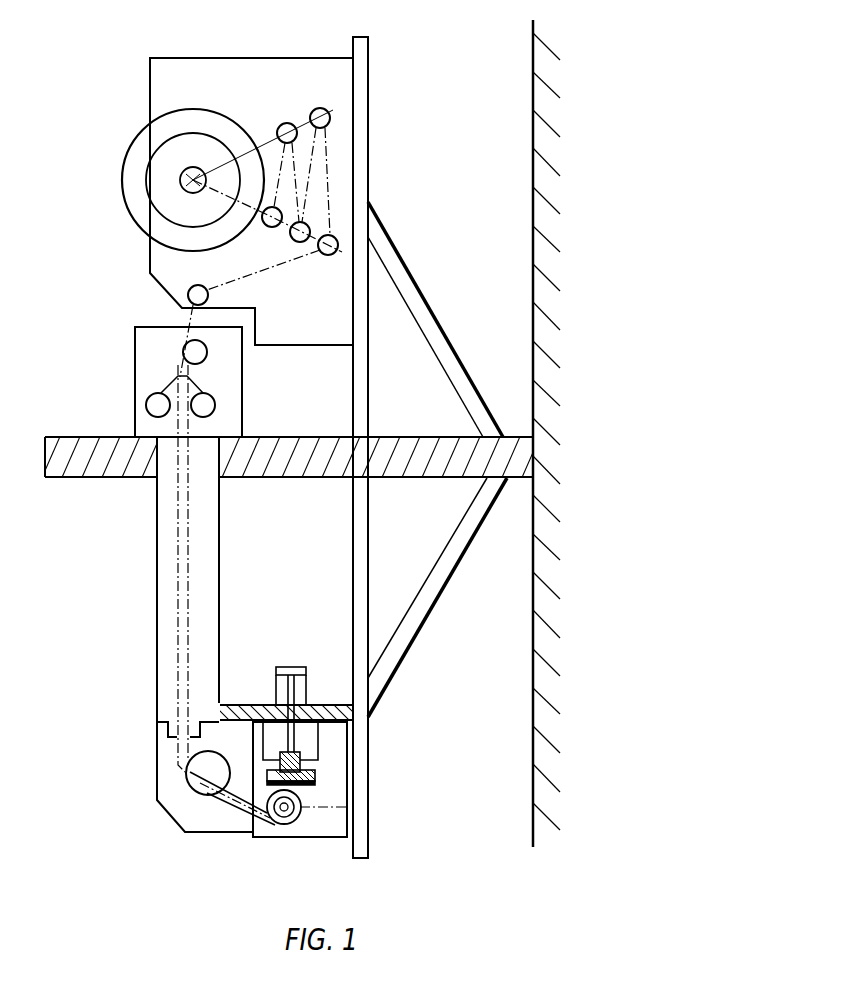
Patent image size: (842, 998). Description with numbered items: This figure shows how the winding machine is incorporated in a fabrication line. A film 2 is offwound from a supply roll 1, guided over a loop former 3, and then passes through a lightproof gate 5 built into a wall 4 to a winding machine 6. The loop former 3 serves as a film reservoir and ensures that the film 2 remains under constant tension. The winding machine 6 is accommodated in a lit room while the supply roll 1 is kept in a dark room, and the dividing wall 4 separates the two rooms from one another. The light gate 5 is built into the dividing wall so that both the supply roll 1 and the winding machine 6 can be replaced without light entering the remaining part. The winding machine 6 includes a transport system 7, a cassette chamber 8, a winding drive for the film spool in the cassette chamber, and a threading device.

The supply roll 1 is at (150, 168).
The film 2 is at (272, 272).
The loop former 3 is at (297, 108).
The wall 4 is at (123, 458).
The lightproof gate 5 is at (148, 383).
The winding machine 6 is at (270, 830).
The transport system 7 is at (197, 780).
The cassette chamber 8 is at (336, 786).